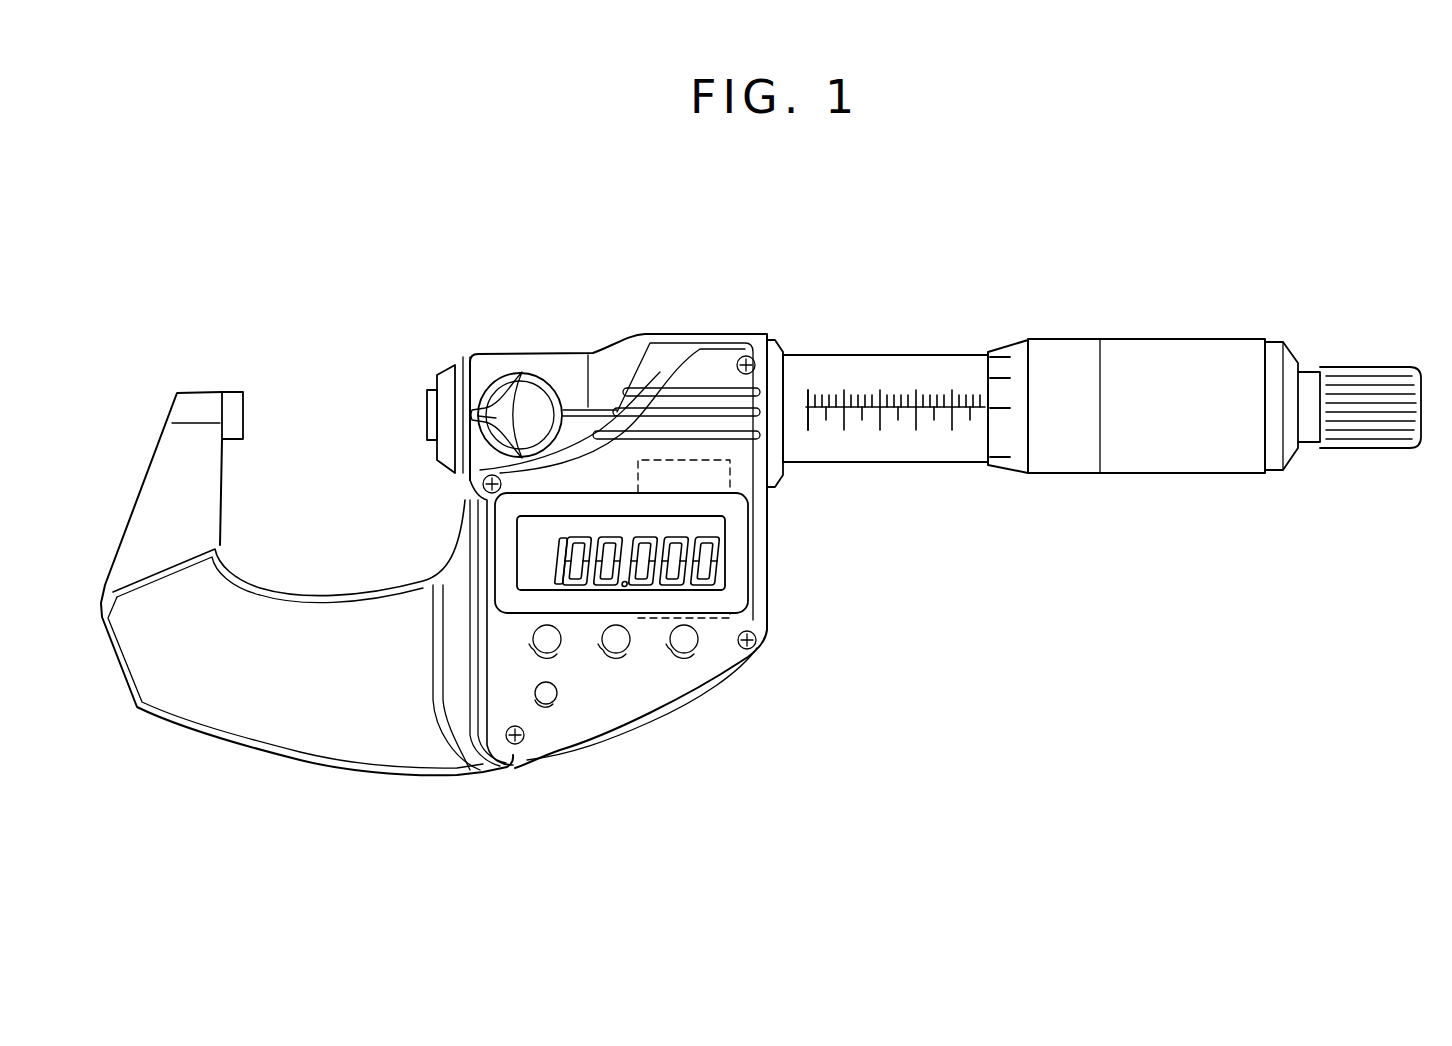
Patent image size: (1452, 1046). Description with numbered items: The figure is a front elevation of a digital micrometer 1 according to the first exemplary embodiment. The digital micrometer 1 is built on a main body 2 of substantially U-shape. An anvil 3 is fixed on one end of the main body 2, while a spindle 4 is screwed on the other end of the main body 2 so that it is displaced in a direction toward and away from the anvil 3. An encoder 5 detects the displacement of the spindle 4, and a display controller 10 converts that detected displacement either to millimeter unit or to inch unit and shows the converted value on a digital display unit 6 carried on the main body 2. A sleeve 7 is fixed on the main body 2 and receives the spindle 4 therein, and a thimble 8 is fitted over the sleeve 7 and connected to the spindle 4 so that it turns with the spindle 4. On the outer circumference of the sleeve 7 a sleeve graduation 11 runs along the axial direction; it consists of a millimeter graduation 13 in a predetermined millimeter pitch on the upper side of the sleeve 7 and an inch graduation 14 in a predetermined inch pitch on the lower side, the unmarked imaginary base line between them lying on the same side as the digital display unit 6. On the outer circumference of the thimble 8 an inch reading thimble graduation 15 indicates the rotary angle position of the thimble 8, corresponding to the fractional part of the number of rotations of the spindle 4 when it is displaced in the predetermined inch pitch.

The digital micrometer 1 is at (338, 310).
The main body 2 is at (318, 752).
The anvil 3 is at (233, 396).
The spindle 4 is at (427, 410).
The encoder 5 is at (680, 371).
The digital display unit 6 is at (724, 567).
The sleeve 7 is at (900, 458).
The thimble 8 is at (1152, 465).
The display controller 10 is at (748, 487).
The sleeve graduation 11 is at (824, 390).
The millimeter graduation 13 is at (895, 396).
The inch graduation 14 is at (915, 428).
The inch reading thimble graduation 15 is at (1000, 352).